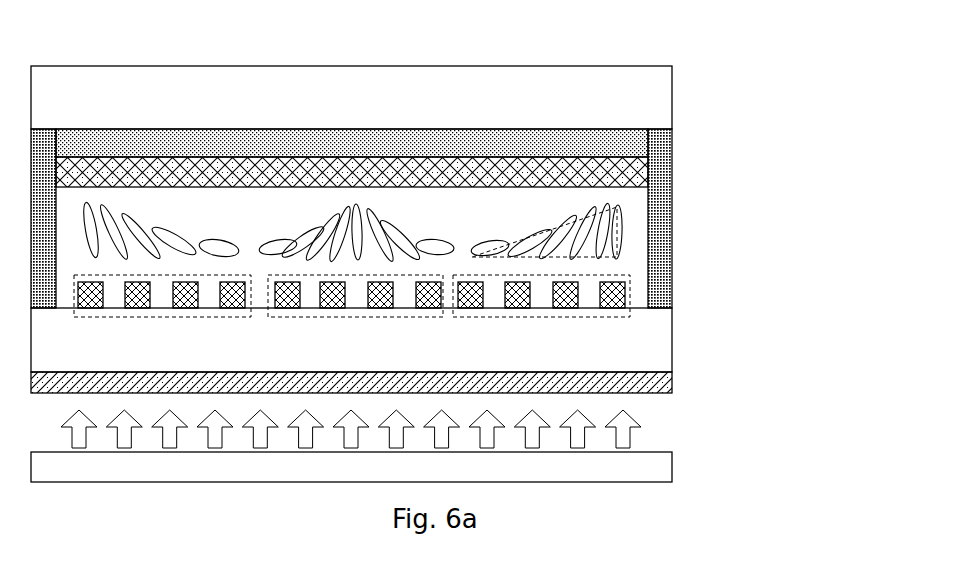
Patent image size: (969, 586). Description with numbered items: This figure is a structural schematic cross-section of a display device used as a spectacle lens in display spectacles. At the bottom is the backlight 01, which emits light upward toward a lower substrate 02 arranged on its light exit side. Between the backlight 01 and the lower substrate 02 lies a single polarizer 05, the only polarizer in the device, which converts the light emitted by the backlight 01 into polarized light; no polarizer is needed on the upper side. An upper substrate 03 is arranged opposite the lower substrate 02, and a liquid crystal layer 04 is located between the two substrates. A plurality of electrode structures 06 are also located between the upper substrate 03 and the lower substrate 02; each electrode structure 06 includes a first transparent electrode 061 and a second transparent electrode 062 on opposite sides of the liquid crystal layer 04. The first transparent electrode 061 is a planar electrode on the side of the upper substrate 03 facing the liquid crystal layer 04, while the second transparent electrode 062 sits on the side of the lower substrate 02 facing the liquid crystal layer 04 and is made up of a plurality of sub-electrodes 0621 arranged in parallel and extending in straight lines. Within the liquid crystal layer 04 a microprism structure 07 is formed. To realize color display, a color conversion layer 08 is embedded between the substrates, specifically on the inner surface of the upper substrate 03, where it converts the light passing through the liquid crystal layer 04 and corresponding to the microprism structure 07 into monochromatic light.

The backlight 01 is at (623, 472).
The lower substrate 02 is at (625, 353).
The upper substrate 03 is at (625, 102).
The liquid crystal layer 04 is at (600, 232).
The polarizer 05 is at (627, 381).
The electrode structure 06 is at (446, 250).
The first transparent electrode 061 is at (618, 173).
The second transparent electrode 062 is at (403, 309).
The sub-electrode 0621 is at (627, 287).
The microprism structure 07 is at (577, 215).
The color conversion layer 08 is at (625, 147).